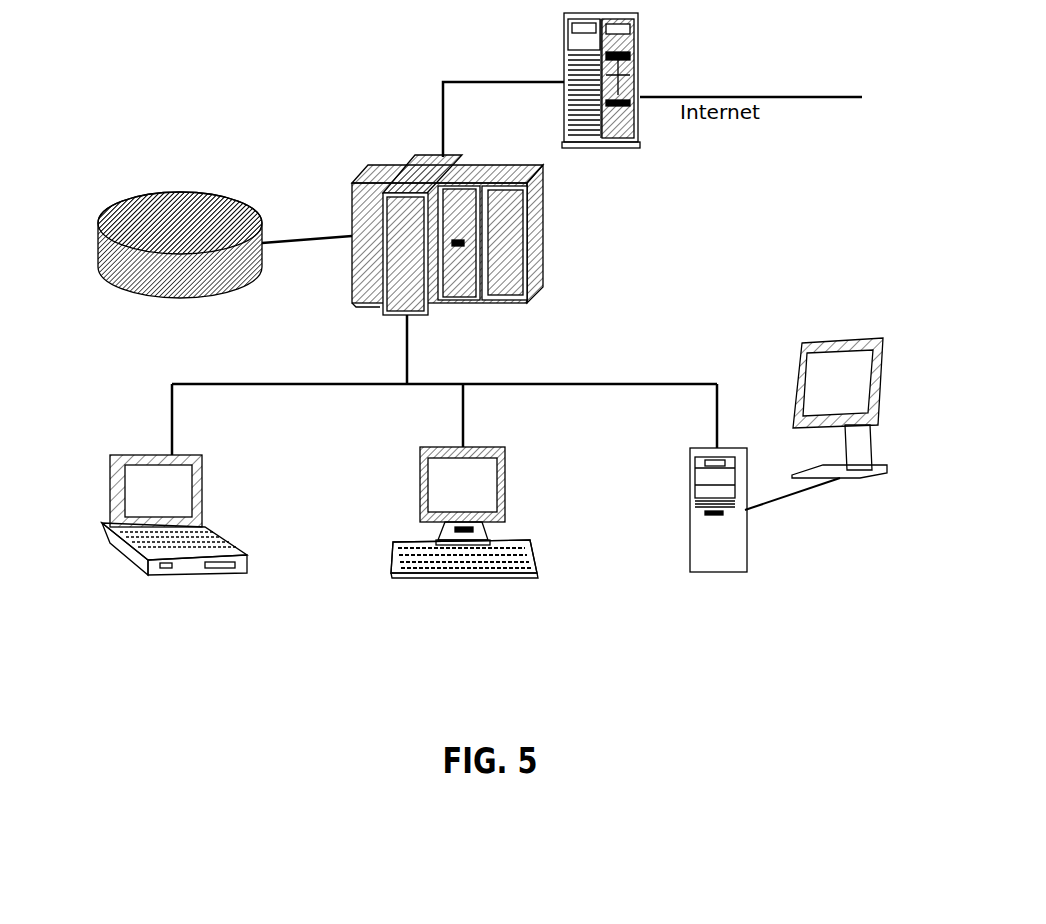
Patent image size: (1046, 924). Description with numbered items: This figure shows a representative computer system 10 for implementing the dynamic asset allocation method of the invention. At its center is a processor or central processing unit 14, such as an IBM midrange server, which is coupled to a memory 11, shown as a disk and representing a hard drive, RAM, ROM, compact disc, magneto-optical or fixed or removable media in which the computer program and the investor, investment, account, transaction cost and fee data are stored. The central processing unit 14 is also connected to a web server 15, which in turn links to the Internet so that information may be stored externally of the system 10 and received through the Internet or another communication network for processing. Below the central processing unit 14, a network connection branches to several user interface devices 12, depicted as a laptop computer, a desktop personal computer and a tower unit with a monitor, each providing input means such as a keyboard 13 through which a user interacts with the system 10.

The computer system 10 is at (296, 82).
The memory 11 is at (137, 198).
The user interface devices 12 is at (212, 575).
The keyboard 13 is at (390, 552).
The central processing unit 14 is at (543, 237).
The web server 15 is at (564, 29).